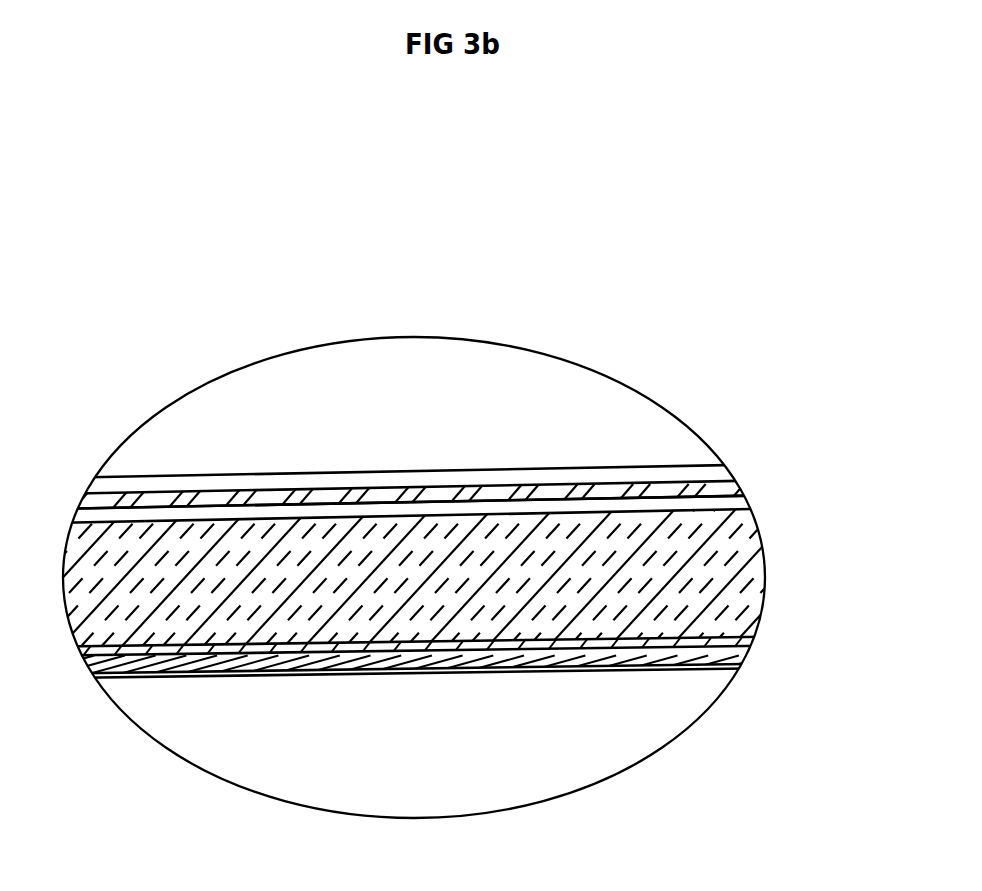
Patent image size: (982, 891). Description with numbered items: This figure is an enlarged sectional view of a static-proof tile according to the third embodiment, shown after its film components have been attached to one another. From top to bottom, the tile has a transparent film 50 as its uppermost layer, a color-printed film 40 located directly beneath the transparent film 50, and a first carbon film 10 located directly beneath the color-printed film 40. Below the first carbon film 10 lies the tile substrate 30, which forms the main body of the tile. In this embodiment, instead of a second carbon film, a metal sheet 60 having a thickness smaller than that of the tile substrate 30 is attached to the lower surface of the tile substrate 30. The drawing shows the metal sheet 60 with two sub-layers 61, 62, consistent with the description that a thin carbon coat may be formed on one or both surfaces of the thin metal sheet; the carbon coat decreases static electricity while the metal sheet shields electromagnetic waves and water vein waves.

The first carbon film 10 is at (745, 508).
The tile substrate 30 is at (758, 570).
The color-printed film 40 is at (736, 491).
The transparent film 50 is at (412, 471).
The metal sheet 60 is at (423, 685).
The first sub-layer 61 is at (746, 643).
The second sub-layer 62 is at (415, 672).